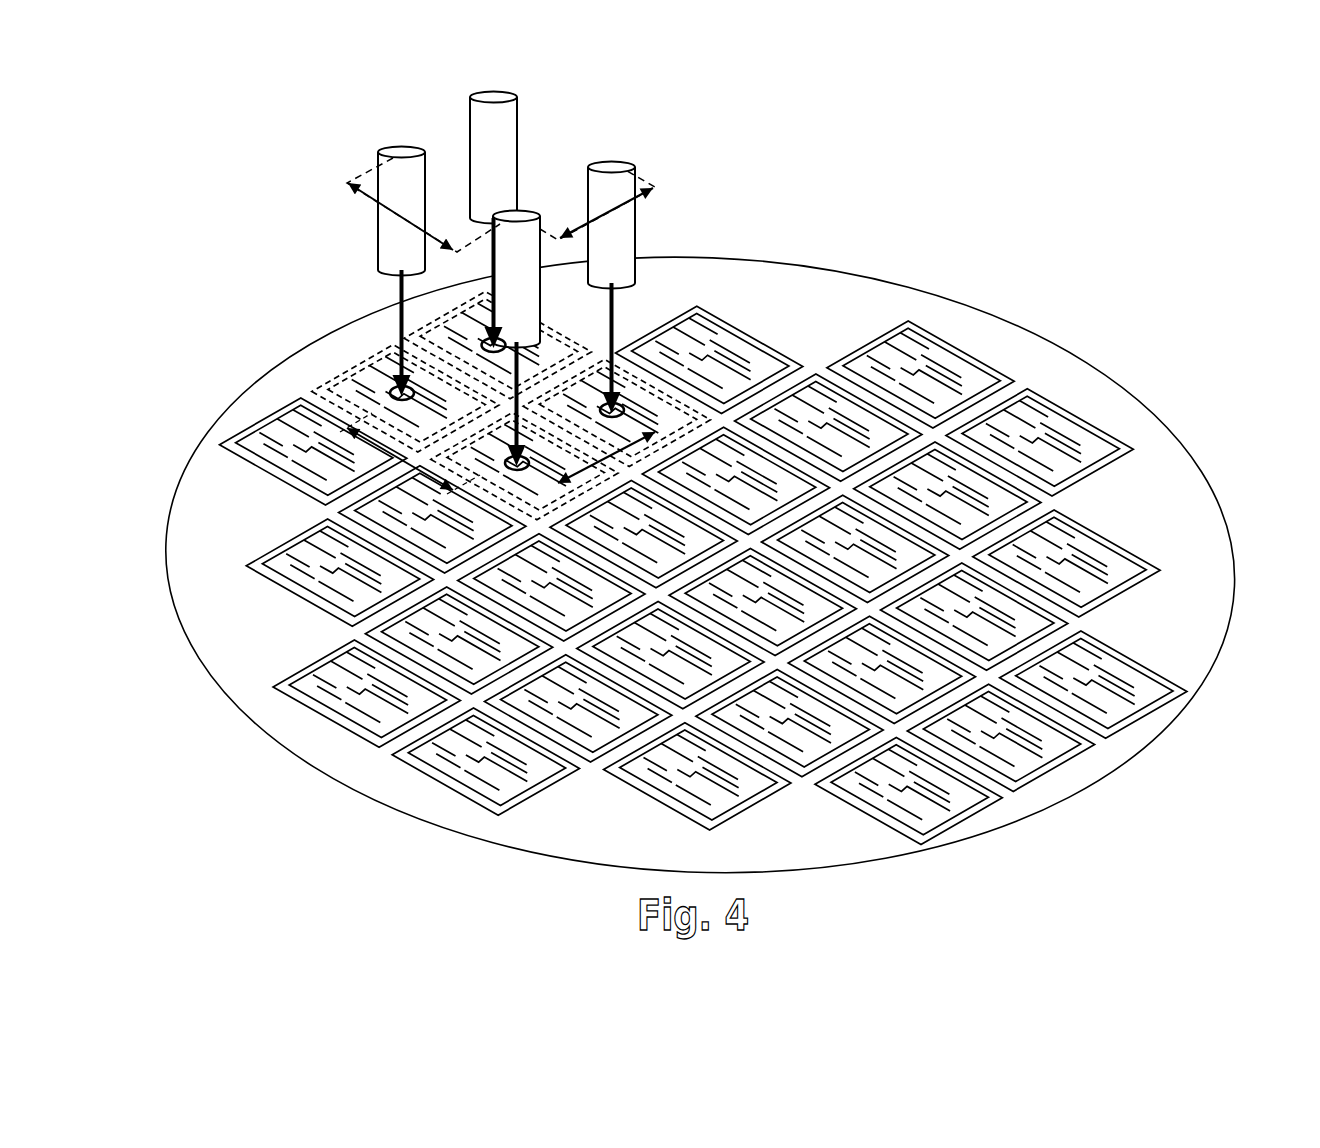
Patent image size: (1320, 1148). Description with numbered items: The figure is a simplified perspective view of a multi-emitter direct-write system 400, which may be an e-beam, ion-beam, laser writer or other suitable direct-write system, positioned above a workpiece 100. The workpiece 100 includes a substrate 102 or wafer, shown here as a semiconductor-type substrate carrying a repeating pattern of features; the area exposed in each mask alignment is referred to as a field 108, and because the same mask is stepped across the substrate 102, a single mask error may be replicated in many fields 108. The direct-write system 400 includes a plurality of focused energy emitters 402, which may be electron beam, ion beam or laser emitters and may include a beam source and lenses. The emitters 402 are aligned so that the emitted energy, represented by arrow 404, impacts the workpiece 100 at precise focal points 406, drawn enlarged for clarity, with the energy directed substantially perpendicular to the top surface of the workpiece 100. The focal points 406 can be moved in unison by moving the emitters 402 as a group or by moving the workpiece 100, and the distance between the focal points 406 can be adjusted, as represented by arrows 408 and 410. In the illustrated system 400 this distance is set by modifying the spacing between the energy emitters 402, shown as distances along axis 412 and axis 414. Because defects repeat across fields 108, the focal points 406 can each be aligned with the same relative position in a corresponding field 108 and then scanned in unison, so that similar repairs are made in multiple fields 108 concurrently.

The workpiece 100 is at (700, 550).
The substrate 102 is at (252, 398).
The field 108 is at (307, 389).
The multi-emitter direct-write system 400 is at (550, 266).
The focused energy emitters 402 is at (487, 93).
The arrow representing emitted energy 404 is at (400, 325).
The focal points 406 is at (397, 392).
The arrow representing focal point distance adjustment 408 is at (378, 445).
The arrow representing focal point distance adjustment 410 is at (648, 437).
The axis 412 is at (372, 198).
The axis 414 is at (646, 192).